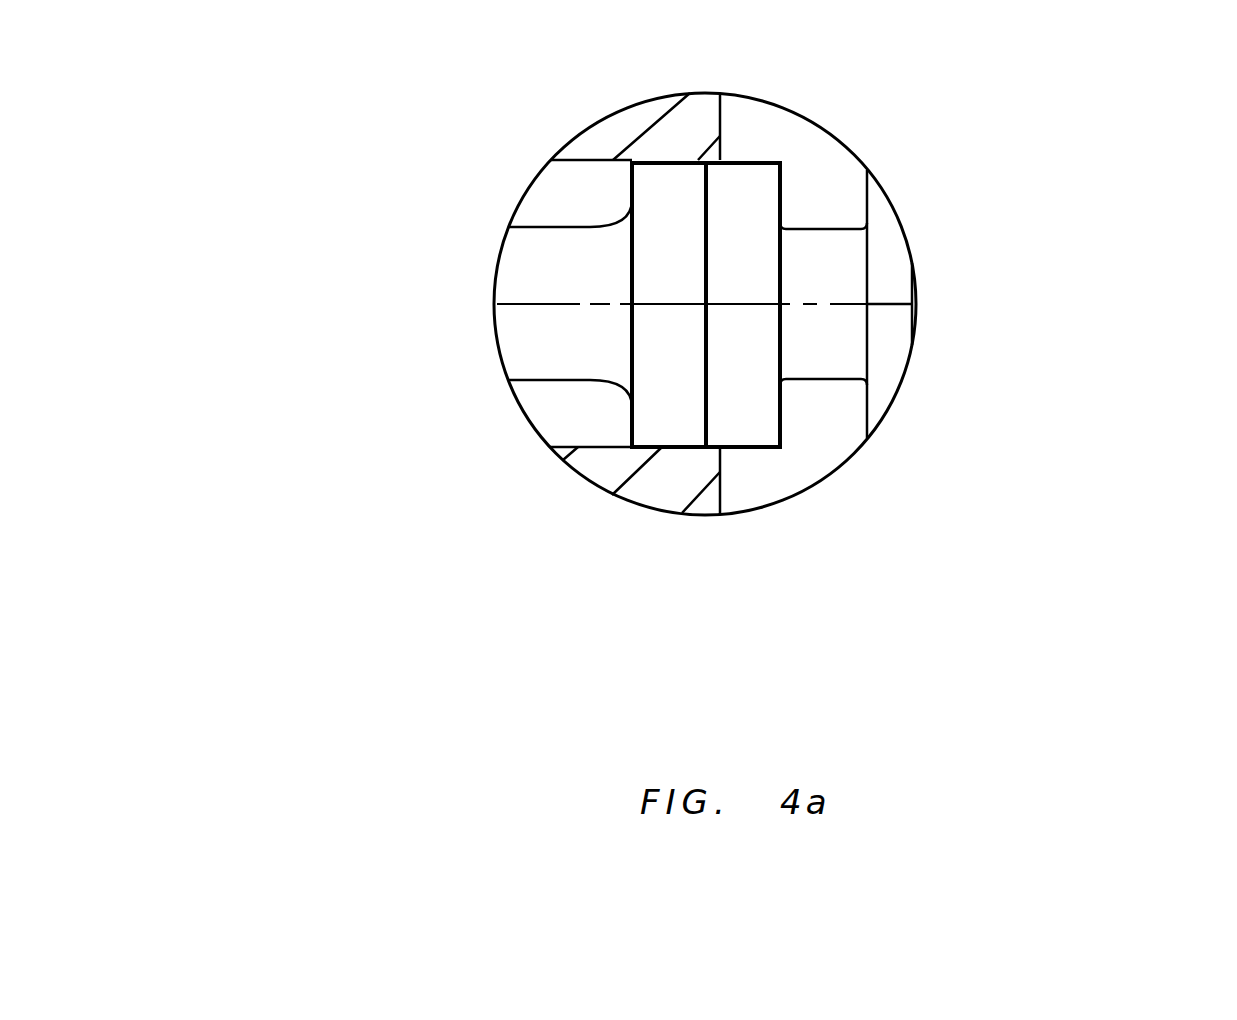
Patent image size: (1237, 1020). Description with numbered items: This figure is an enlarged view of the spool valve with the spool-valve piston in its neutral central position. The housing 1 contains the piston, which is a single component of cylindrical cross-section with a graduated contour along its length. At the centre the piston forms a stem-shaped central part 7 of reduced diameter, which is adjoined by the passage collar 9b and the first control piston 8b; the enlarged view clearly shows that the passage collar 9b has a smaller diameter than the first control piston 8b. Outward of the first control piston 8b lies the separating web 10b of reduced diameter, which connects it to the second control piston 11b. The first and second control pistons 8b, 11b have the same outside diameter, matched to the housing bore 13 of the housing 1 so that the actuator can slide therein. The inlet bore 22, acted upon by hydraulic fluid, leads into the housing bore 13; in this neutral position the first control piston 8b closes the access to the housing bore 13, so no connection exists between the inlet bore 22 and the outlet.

The housing 1 is at (598, 485).
The central part 7 is at (535, 262).
The housing bore 13 is at (557, 412).
The passage collar 9b is at (674, 432).
The first control piston 8b is at (748, 431).
The inlet bore 22 is at (829, 447).
The second control piston 11b is at (907, 343).
The separating web 10b is at (849, 349).